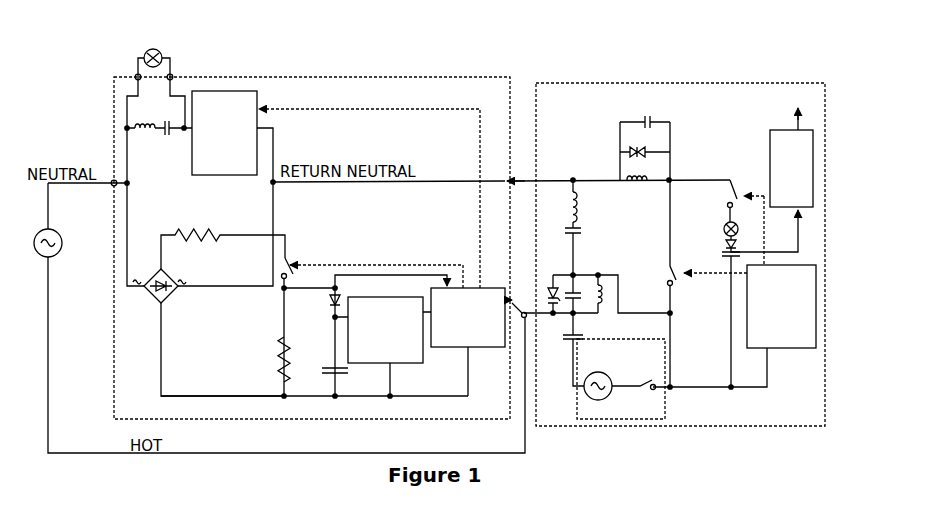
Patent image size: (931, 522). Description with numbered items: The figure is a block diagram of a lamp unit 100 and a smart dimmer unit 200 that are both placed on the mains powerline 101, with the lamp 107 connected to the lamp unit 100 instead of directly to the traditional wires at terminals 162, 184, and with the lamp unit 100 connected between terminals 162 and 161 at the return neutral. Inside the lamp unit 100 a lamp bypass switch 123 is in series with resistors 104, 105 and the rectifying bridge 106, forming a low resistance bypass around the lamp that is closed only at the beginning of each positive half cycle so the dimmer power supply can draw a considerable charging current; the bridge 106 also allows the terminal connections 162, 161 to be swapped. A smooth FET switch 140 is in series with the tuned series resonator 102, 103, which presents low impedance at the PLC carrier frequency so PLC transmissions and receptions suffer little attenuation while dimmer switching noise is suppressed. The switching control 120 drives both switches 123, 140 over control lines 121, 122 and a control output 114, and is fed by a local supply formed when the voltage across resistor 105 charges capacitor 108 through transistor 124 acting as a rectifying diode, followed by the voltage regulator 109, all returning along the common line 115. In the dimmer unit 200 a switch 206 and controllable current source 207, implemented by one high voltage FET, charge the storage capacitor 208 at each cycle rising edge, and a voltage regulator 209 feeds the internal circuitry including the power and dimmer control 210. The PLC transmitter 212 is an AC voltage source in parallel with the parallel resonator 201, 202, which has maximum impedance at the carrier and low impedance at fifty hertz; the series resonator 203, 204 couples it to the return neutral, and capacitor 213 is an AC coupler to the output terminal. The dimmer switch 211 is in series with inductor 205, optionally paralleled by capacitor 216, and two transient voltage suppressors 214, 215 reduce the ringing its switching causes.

The lamp unit 100 is at (335, 146).
The mains powerline 101 is at (55, 232).
The tuned series resonator inductor 102 is at (137, 131).
The tuned series resonator capacitor 103 is at (171, 135).
The resistor 104 is at (212, 230).
The resistor 105 is at (280, 352).
The rectifying bridge 106 is at (170, 294).
The lamp load 107 is at (163, 44).
The capacitor 108 is at (326, 368).
The voltage regulator 109 is at (401, 297).
The control output switch 114 is at (524, 307).
The common return line 115 is at (242, 396).
The switching control 120 is at (446, 347).
The FET switch control line 121 is at (445, 109).
The switch control line 122 is at (386, 265).
The lamp bypass switch 123 is at (288, 260).
The transistor 124 is at (330, 301).
The smooth FET switch 140 is at (242, 91).
The terminal 161 is at (523, 169).
The terminal 162 is at (112, 186).
The traditional wire 184 is at (172, 76).
The dimmer unit 200 is at (706, 166).
The parallel resonator capacitor 201 is at (564, 297).
The parallel resonator inductor 202 is at (593, 286).
The series resonator capacitor 203 is at (583, 226).
The series resonator inductor 204 is at (569, 197).
The inductor 205 is at (645, 183).
The switch 206 is at (737, 194).
The controllable current source 207 is at (724, 235).
The capacitor 208 is at (724, 256).
The voltage regulator 209 is at (770, 167).
The power and dimmer control 210 is at (776, 348).
The dimmer switch 211 is at (708, 259).
The PLC transmitter 212 is at (625, 392).
The capacitor 213 is at (565, 338).
The transient voltage suppressor 214 is at (550, 296).
The transient voltage suppressor 215 is at (648, 142).
The capacitor 216 is at (650, 115).